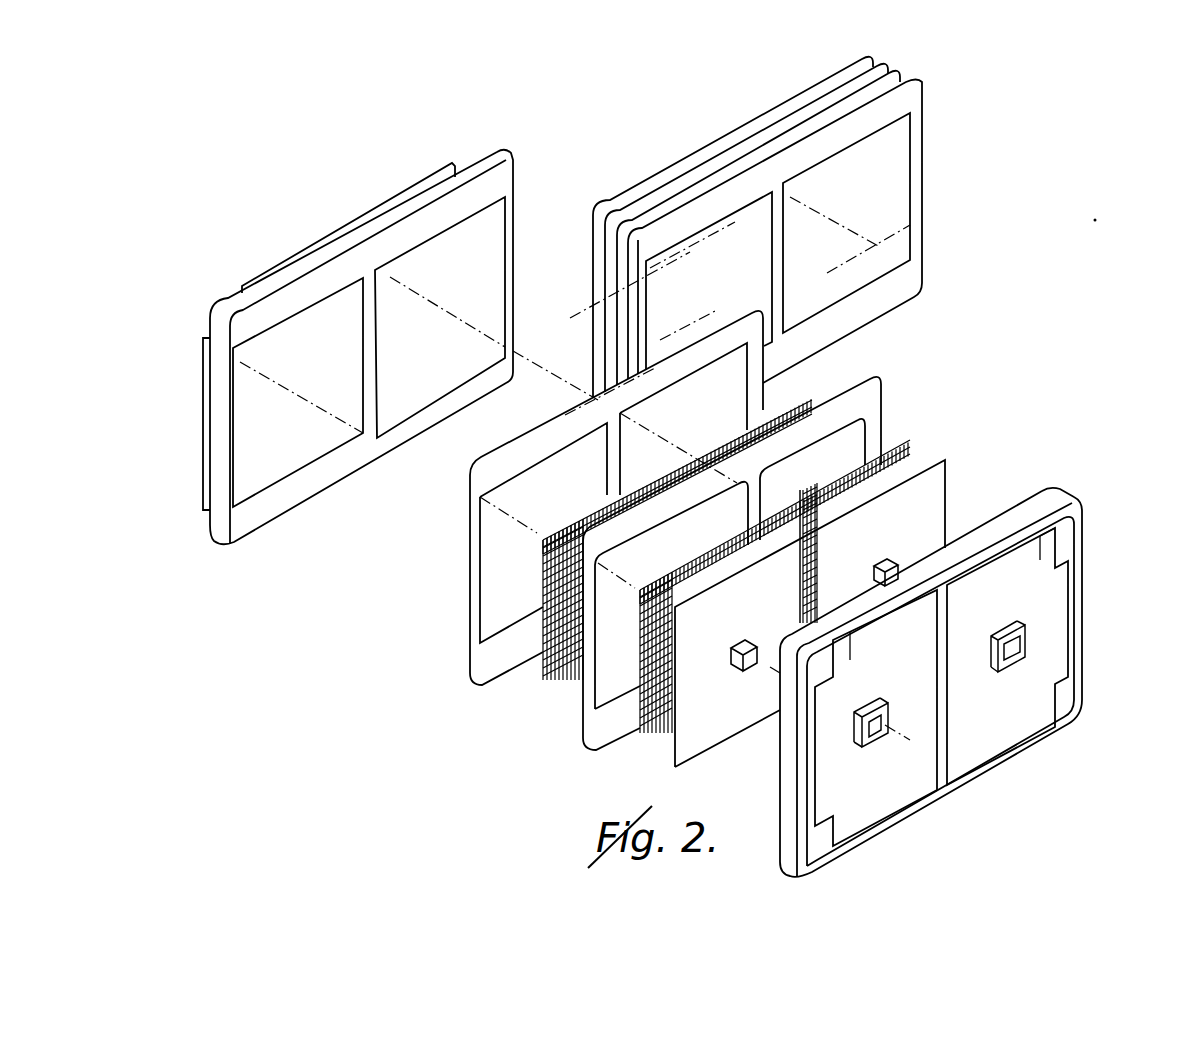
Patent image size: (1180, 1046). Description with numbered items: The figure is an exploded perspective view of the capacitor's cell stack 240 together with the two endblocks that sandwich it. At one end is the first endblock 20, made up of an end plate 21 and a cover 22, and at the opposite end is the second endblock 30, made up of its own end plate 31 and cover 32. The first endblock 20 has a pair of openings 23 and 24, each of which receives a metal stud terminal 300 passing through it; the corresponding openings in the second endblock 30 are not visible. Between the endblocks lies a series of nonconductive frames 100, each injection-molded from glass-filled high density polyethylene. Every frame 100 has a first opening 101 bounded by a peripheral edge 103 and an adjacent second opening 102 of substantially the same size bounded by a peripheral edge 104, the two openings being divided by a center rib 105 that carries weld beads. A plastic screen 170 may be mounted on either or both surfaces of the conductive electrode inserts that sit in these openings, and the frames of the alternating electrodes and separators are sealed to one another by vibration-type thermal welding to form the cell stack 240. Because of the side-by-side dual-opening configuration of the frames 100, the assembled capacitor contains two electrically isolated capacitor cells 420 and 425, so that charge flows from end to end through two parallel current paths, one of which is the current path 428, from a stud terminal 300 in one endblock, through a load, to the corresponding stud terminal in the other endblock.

The cell stack 240 is at (966, 68).
The second endblock 30 is at (370, 318).
The end plate 31 is at (217, 388).
The cover 32 is at (380, 205).
The nonconductive frame 100 is at (798, 236).
The first opening 101 is at (925, 181).
The second opening 102 is at (707, 220).
The peripheral edge 103 is at (921, 228).
The peripheral edge 104 is at (747, 197).
The center rib 105 is at (782, 250).
The plastic screen 170 is at (808, 373).
The capacitor cell 420 is at (598, 590).
The parallel current path 428 is at (750, 491).
The end plate 21 is at (777, 738).
The metal stud terminal 300 is at (895, 545).
The first endblock 20 is at (967, 652).
The cover 22 is at (950, 800).
The opening 23 is at (1030, 632).
The opening 24 is at (860, 742).
The capacitor cell 425 is at (1003, 732).